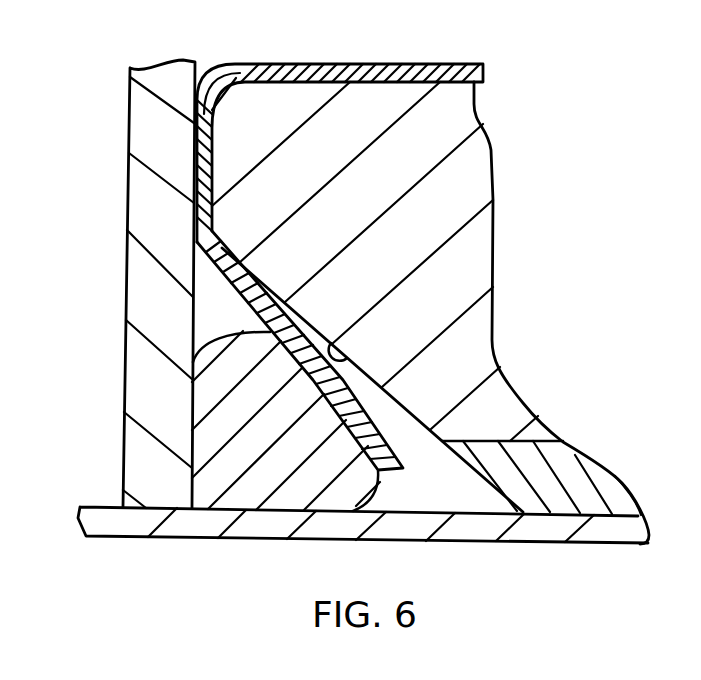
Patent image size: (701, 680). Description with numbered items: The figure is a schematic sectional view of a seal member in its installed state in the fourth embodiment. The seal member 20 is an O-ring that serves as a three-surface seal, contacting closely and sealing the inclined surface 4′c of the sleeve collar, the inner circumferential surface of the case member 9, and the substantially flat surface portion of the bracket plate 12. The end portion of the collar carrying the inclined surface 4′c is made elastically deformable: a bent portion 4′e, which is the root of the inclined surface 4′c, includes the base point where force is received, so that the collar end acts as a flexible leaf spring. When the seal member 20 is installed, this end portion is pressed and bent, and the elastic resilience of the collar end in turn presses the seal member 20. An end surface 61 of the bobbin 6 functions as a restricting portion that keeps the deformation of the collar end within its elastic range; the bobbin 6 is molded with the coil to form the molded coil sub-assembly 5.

The bobbin 6 is at (378, 104).
The bent portion 4′e is at (196, 248).
The inclined surface 4′c is at (270, 332).
The bracket plate 12 is at (148, 277).
The end surface 61 is at (347, 358).
The seal member 20 is at (272, 497).
The case member 9 is at (452, 532).
The molded coil sub-assembly 5 is at (558, 498).